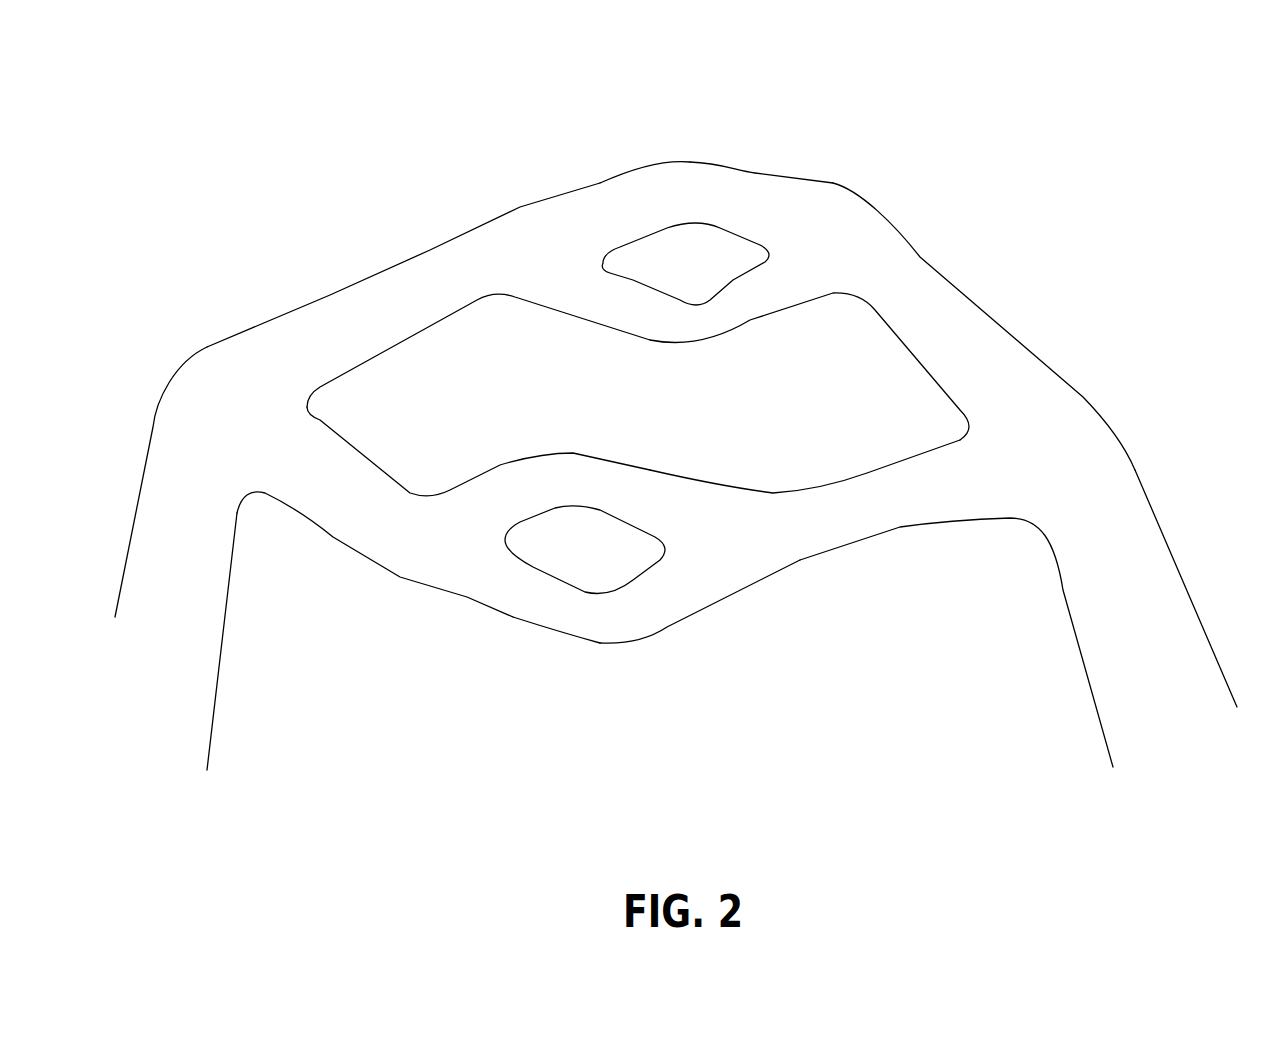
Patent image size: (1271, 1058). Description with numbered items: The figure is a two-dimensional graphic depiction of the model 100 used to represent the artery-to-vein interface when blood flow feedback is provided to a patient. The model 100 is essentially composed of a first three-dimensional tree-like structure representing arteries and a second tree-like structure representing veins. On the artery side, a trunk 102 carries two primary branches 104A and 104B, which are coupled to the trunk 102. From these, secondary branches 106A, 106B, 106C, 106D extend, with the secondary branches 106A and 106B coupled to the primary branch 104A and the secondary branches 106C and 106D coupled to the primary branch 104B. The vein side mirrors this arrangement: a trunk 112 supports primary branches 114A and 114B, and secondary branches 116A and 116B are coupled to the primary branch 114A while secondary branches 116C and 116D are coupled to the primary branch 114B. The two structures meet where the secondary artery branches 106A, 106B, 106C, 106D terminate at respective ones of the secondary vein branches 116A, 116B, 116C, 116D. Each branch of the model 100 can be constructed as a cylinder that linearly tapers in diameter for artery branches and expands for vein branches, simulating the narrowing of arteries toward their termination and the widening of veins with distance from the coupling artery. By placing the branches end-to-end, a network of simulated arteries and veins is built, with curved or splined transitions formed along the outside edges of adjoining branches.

The model 100 is at (294, 106).
The trunk 102 is at (217, 558).
The primary branch 104A is at (403, 265).
The primary branch 104B is at (375, 559).
The secondary branch 106A is at (571, 169).
The secondary branch 106B is at (478, 350).
The secondary branch 106C is at (478, 451).
The secondary branch 106D is at (484, 632).
The trunk 112 is at (1203, 588).
The primary branch 114A is at (984, 326).
The primary branch 114B is at (956, 642).
The secondary branch 116A is at (789, 149).
The secondary branch 116B is at (809, 366).
The secondary branch 116C is at (805, 460).
The secondary branch 116D is at (702, 616).